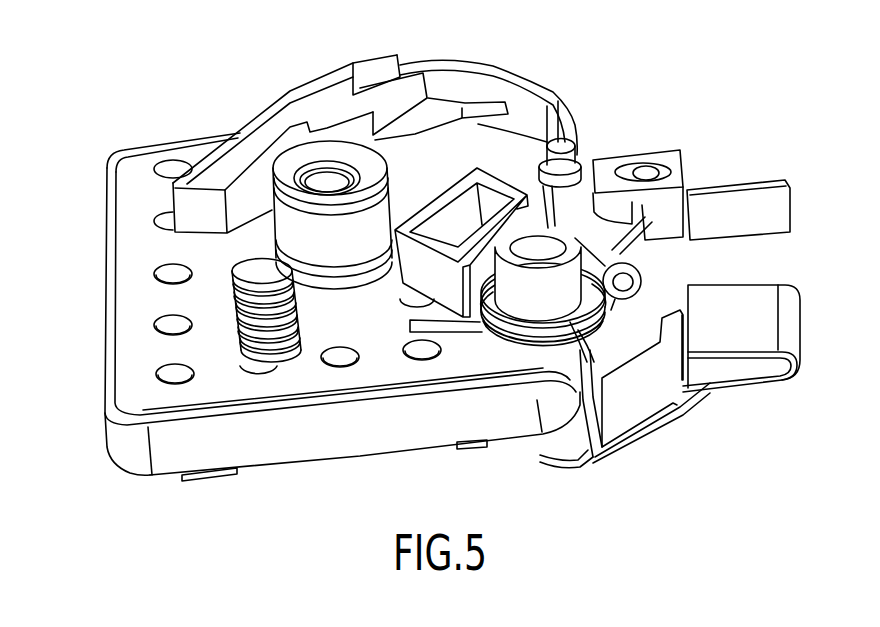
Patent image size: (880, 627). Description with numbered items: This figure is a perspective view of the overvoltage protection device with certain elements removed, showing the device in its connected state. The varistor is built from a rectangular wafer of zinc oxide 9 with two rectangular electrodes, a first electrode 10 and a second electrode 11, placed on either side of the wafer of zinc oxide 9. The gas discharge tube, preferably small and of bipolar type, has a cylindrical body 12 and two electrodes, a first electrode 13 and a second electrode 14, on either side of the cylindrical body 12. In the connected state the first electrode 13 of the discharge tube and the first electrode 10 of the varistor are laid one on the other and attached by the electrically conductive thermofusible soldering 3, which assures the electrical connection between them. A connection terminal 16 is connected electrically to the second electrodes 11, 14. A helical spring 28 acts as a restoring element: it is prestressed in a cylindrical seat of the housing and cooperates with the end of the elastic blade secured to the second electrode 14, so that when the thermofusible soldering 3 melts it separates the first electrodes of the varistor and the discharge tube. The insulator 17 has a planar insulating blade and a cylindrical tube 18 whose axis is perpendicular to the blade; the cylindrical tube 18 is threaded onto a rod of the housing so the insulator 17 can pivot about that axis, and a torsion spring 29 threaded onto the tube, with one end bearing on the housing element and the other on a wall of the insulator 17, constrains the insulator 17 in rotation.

The electrically conductive thermofusible soldering 3 is at (320, 280).
The wafer of zinc oxide 9 is at (120, 437).
The first electrode of the varistor 10 is at (135, 162).
The second electrode of the varistor 11 is at (210, 477).
The cylindrical body 12 is at (290, 240).
The first electrode of the discharge tube 13 is at (353, 283).
The second electrode of the discharge tube 14 is at (325, 172).
The connection terminal 16 is at (747, 380).
The insulator 17 is at (484, 125).
The cylindrical tube 18 is at (633, 253).
The helical spring 28 is at (253, 345).
The torsion spring 29 is at (593, 447).